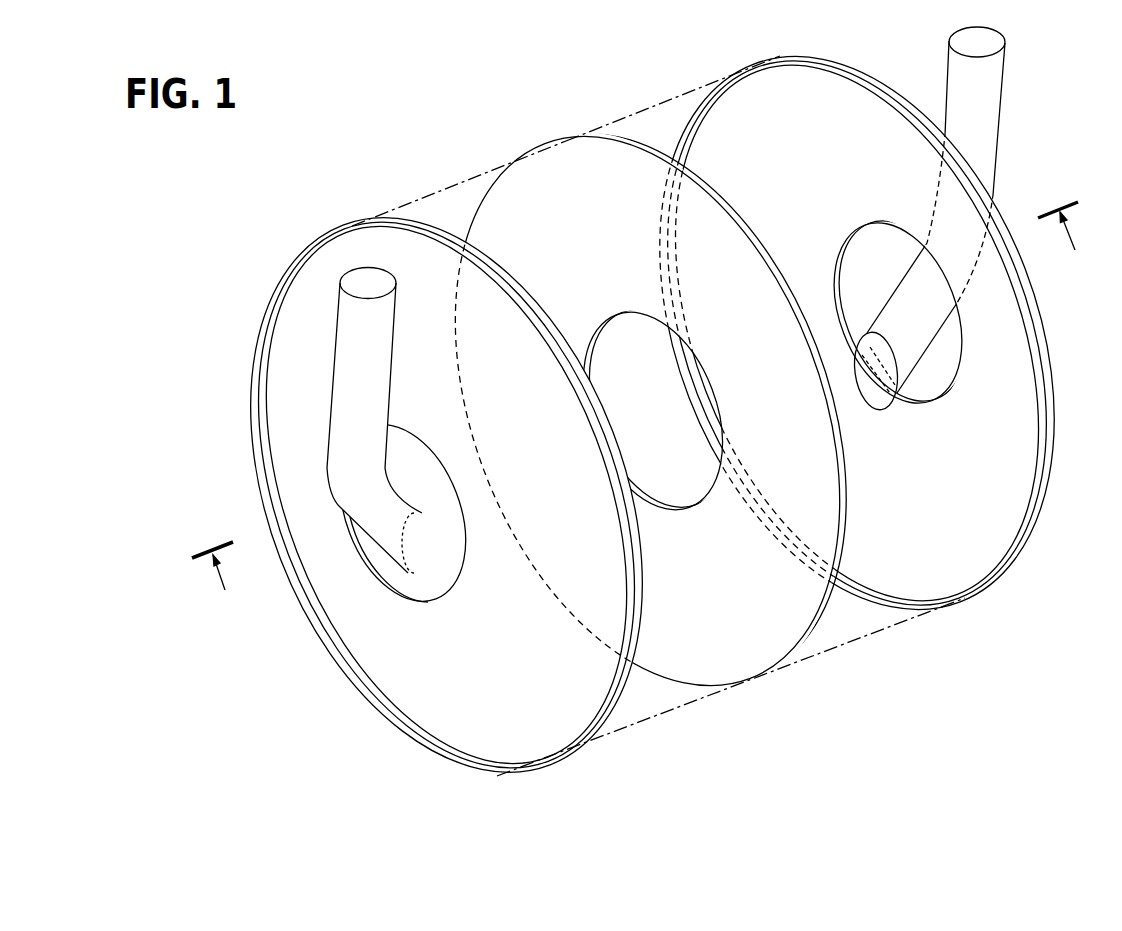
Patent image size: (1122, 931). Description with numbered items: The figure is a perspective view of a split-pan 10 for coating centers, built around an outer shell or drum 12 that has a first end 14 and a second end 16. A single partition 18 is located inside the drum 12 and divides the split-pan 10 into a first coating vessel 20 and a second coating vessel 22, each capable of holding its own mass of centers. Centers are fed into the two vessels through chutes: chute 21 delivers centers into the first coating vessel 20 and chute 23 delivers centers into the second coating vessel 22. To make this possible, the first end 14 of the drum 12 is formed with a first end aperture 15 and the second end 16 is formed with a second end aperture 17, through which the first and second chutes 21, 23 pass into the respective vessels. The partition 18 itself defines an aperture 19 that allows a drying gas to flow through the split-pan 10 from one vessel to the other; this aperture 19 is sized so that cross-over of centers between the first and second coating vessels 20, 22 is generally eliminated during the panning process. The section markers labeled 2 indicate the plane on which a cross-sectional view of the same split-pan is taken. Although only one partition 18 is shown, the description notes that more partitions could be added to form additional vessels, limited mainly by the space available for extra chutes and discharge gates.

The split-pan 10 is at (788, 703).
The outer shell or drum 12 is at (860, 638).
The first end 14 is at (512, 763).
The first end aperture 15 is at (377, 573).
The second end 16 is at (1055, 453).
The second end aperture 17 is at (943, 348).
The partition 18 is at (552, 167).
The aperture 19 is at (677, 495).
The first coating vessel 20 is at (443, 203).
The chute 21 is at (340, 375).
The second coating vessel 22 is at (668, 112).
The chute 23 is at (992, 97).
The plane 2— 2 is at (635, 386).